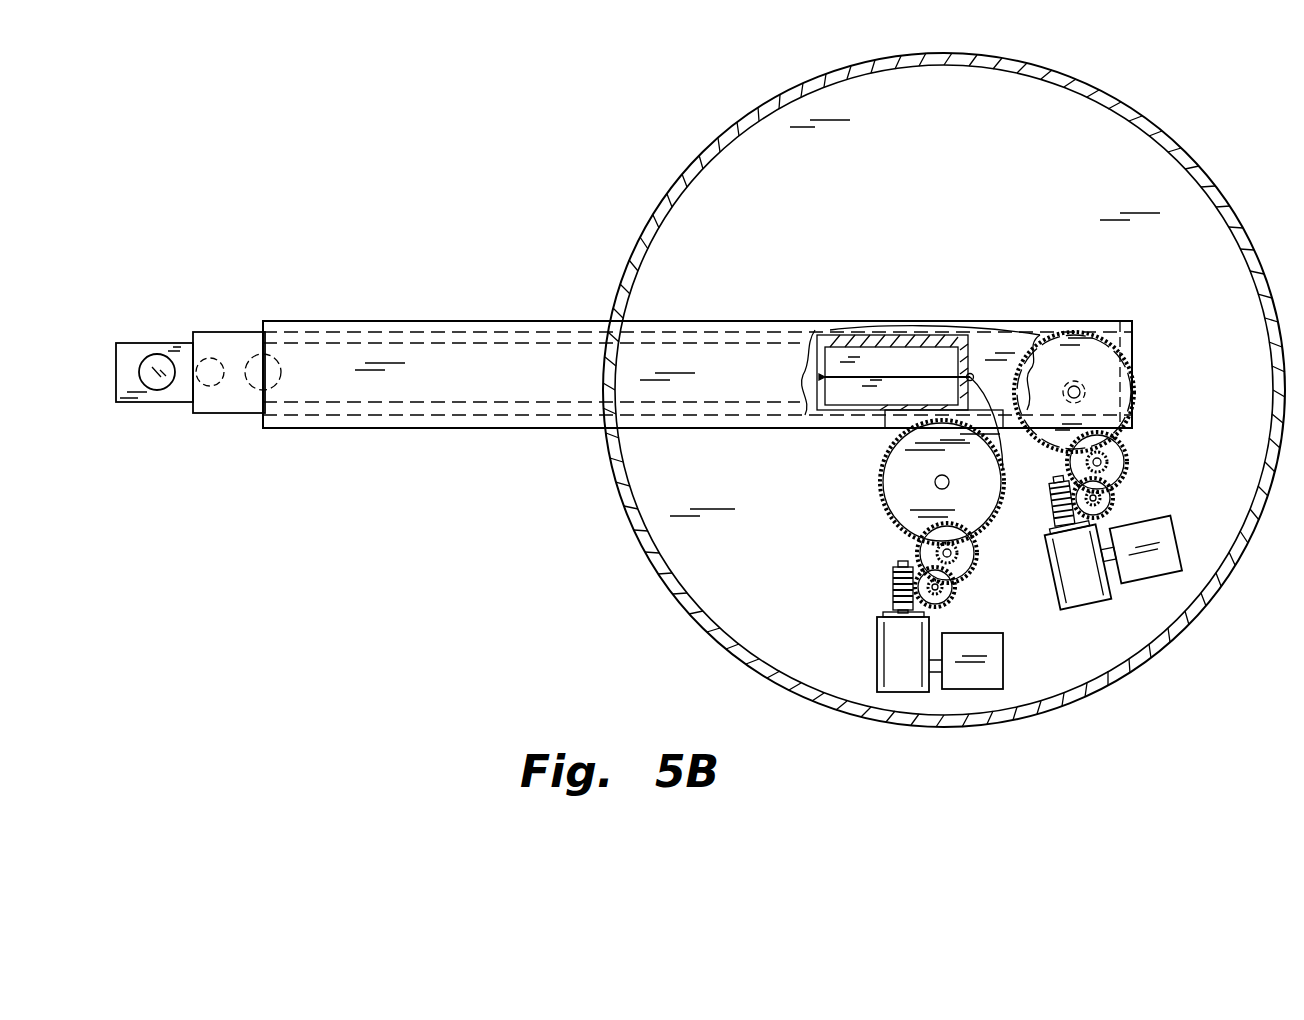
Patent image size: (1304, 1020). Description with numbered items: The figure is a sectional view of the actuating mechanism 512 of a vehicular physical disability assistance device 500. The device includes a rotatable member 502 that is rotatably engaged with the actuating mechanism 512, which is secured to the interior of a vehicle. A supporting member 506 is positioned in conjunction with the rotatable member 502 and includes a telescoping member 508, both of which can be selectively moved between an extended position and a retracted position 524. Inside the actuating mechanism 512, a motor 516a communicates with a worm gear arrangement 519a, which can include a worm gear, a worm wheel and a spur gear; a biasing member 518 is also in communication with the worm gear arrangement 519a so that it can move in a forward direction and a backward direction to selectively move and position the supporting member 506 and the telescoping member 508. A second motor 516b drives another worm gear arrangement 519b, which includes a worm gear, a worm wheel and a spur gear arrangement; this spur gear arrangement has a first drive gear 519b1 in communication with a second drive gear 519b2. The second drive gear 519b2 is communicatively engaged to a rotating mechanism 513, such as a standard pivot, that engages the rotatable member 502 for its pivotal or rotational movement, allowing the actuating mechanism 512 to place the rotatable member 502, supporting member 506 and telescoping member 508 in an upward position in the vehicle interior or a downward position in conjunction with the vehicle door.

The vehicular physical disability assistance device 500 is at (232, 220).
The rotatable member 502 is at (432, 321).
The supporting member 506 is at (222, 332).
The telescoping member 508 is at (160, 343).
The actuating mechanism 512 is at (658, 171).
The rotating mechanism 513 is at (1074, 386).
The biasing member 518 is at (885, 377).
The worm gear arrangement 519a is at (903, 545).
The worm gear arrangement 519b is at (1140, 483).
The first drive gear 519b1 is at (1127, 445).
The second drive gear 519b2 is at (1138, 372).
The motor 516a is at (878, 618).
The motor 516b is at (1048, 600).
The retracted position 524 is at (285, 305).